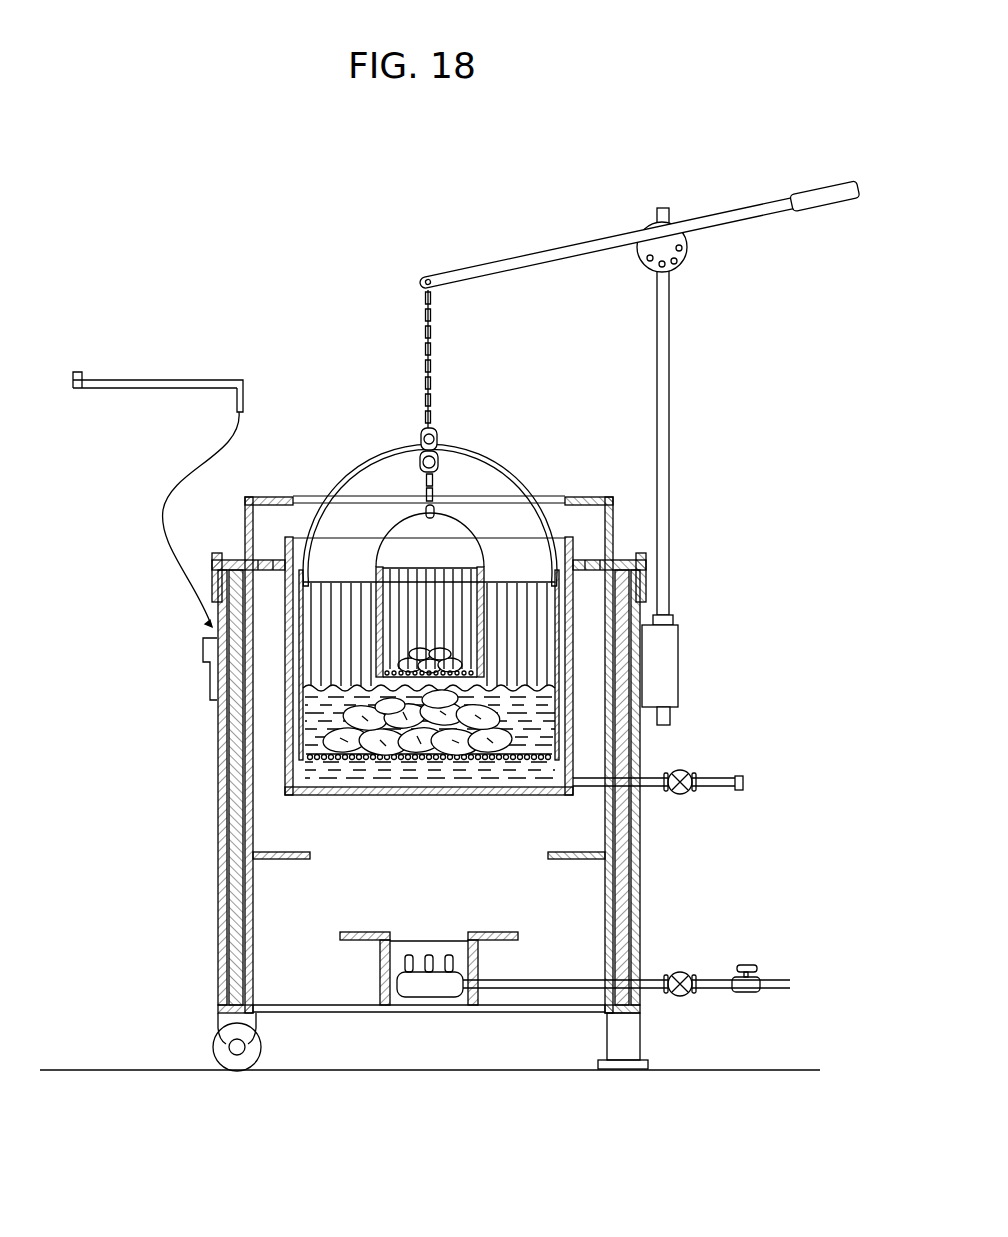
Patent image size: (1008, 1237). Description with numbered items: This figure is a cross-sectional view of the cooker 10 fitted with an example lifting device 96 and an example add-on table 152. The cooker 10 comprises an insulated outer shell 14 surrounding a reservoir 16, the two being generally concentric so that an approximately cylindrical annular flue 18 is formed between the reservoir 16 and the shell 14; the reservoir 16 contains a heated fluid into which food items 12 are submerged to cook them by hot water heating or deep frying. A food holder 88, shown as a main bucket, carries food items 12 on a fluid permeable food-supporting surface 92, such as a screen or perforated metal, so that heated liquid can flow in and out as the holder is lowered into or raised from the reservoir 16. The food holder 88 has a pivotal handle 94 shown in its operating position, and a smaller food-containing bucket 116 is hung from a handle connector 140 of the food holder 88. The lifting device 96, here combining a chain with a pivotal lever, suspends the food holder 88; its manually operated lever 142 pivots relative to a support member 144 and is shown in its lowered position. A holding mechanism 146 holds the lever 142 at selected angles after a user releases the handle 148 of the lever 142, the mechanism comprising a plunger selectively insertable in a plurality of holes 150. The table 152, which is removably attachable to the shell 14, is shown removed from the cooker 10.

The cooker 10 is at (178, 290).
The food items 12 is at (428, 647).
The insulated outer shell 14 is at (218, 912).
The reservoir 16 is at (393, 790).
The annular flue 18 is at (270, 728).
The food holder 88 is at (577, 668).
The food-supporting surface 92 is at (517, 762).
The handle 94 is at (504, 474).
The lifting device 96 is at (426, 331).
The food-containing bucket 116 is at (484, 613).
The handle connector 140 is at (420, 446).
The lever 142 is at (494, 262).
The support member 144 is at (670, 400).
The holding mechanism 146 is at (688, 256).
The handle 148 is at (812, 190).
The holes 150 is at (677, 264).
The table 152 is at (148, 380).